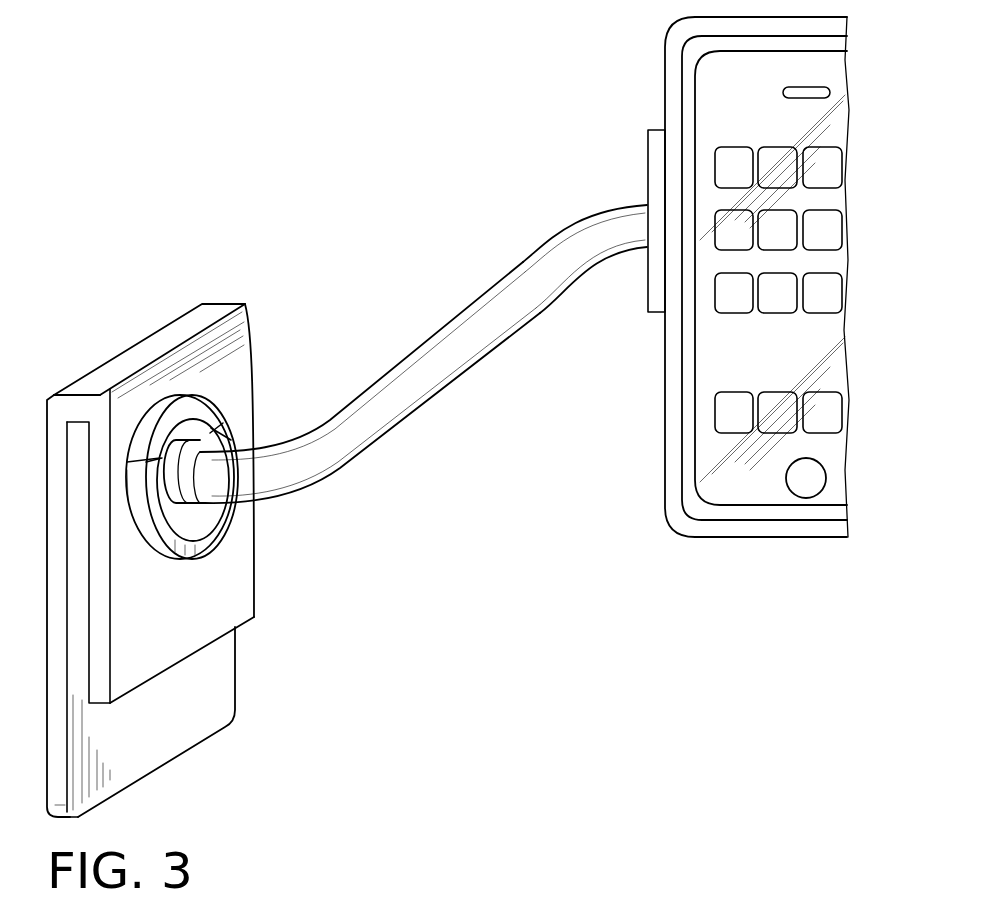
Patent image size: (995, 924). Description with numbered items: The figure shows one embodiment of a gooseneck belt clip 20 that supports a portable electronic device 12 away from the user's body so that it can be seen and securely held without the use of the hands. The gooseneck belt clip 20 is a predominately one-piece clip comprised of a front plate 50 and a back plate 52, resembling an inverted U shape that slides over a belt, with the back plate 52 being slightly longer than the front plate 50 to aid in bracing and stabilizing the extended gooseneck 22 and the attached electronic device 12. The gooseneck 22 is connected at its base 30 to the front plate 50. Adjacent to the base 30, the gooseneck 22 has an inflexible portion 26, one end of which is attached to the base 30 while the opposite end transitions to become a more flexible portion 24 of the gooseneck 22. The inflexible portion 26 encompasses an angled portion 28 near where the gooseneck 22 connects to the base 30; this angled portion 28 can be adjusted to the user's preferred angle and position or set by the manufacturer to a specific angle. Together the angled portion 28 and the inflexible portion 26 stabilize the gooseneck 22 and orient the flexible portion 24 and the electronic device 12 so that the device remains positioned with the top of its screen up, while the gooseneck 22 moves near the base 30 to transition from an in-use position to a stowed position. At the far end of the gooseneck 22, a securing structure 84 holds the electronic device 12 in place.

The portable electronic device 12 is at (665, 78).
The gooseneck belt clip 20 is at (237, 244).
The gooseneck 22 is at (413, 353).
The flexible portion 24 is at (540, 313).
The inflexible portion 26 is at (203, 403).
The angled portion 28 is at (303, 495).
The base 30 is at (167, 410).
The front plate 50 is at (233, 593).
The back plate 52 is at (220, 698).
The securing structure 84 is at (648, 173).